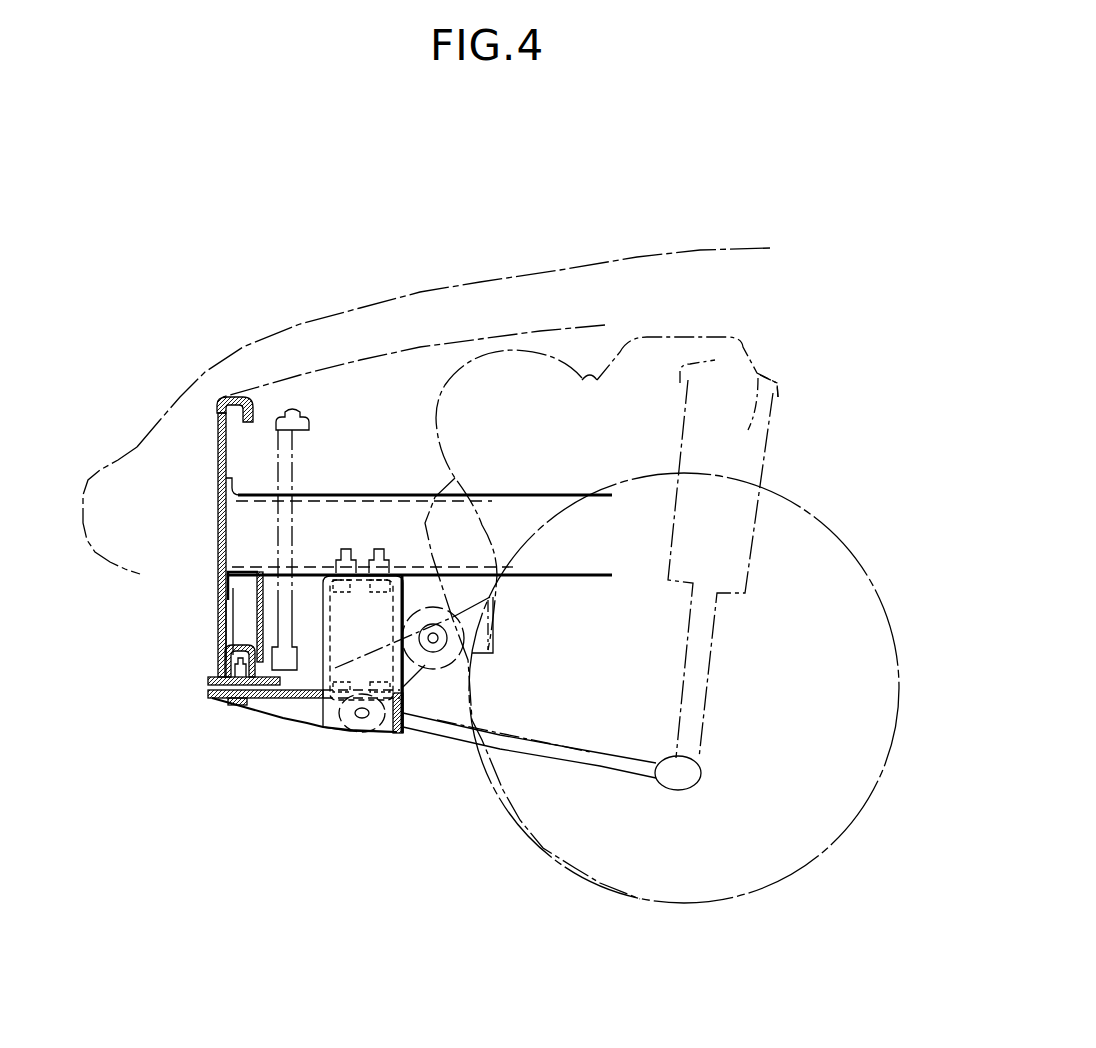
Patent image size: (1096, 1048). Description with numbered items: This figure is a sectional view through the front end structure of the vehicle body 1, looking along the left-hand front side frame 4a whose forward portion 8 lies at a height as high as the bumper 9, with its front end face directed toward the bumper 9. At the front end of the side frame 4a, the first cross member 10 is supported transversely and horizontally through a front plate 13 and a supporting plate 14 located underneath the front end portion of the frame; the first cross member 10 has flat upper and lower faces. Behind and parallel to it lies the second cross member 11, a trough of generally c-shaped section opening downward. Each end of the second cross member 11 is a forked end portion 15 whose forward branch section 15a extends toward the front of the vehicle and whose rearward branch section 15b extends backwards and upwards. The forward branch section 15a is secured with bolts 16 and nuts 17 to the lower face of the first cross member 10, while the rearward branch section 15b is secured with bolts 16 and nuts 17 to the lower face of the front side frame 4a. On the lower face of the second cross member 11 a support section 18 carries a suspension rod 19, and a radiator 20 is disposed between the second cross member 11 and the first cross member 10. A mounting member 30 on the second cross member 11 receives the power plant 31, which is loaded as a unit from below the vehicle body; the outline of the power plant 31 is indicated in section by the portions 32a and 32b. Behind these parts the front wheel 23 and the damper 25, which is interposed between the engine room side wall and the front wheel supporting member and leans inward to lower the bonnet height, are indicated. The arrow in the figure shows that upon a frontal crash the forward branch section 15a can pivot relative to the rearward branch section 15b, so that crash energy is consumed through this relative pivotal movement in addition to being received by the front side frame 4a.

The vehicle body 1 is at (637, 256).
The left-hand front side frame 4a is at (333, 505).
The forward portion of the front side frame 8 is at (372, 502).
The bumper 9 is at (87, 545).
The first cross member 10 is at (218, 622).
The second cross member 11 is at (395, 734).
The front plate 13 is at (220, 438).
The supporting plate 14 is at (218, 597).
The forked end portion 15 is at (302, 735).
The forward branch section 15a is at (258, 705).
The rearward branch section 15b is at (337, 643).
The bolt 16 is at (340, 586).
The nut 17 is at (347, 552).
The support section 18 is at (333, 722).
The suspension rod 19 is at (528, 752).
The radiator 20 is at (291, 410).
The front wheel 23 is at (862, 560).
The damper 25 is at (760, 463).
The mounting member 30 is at (443, 661).
The power plant 31 is at (740, 341).
The fender wall 32a is at (510, 350).
The fender wall 32b is at (670, 337).